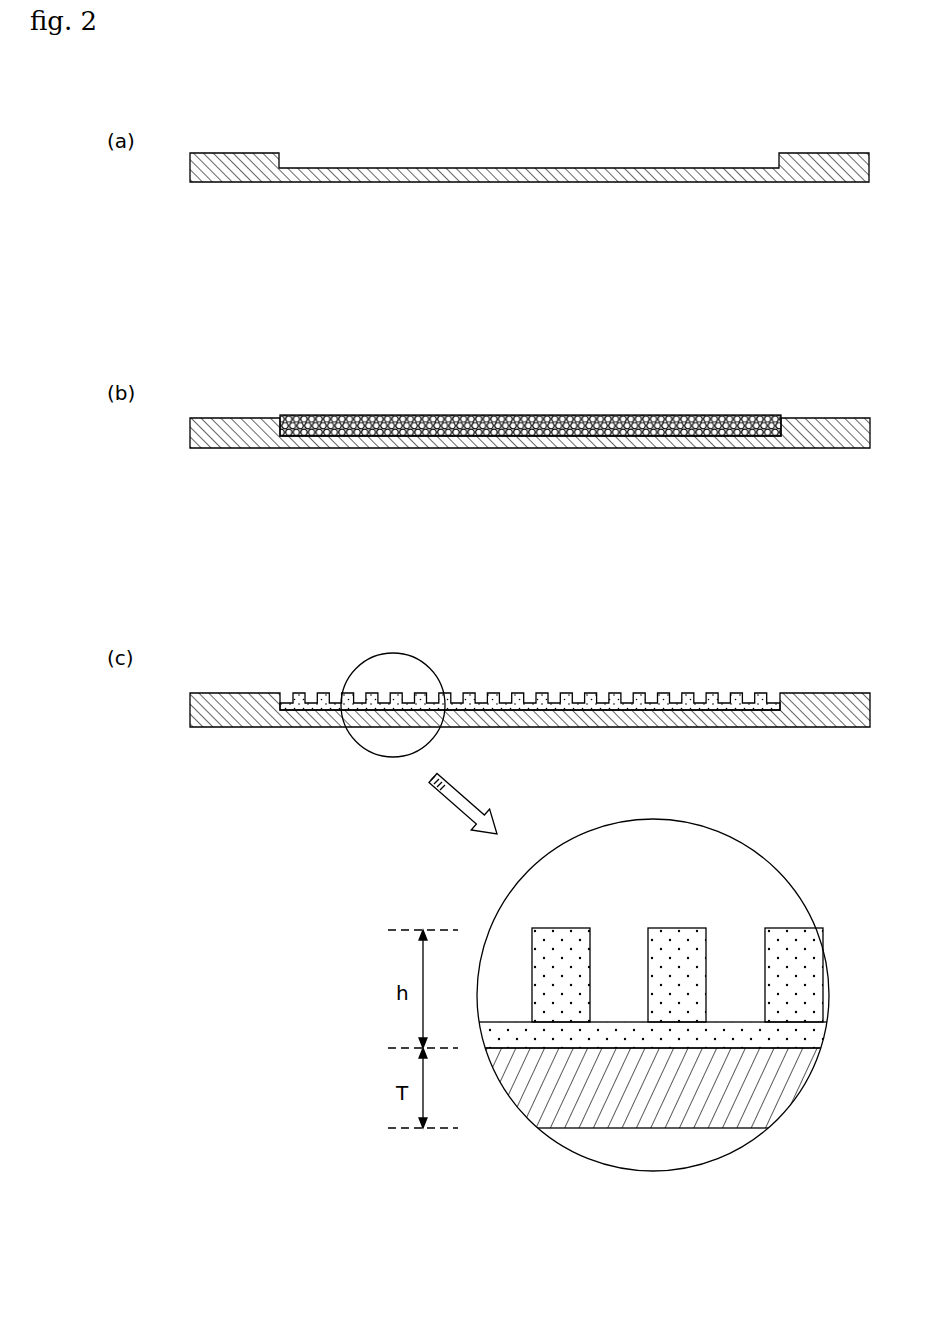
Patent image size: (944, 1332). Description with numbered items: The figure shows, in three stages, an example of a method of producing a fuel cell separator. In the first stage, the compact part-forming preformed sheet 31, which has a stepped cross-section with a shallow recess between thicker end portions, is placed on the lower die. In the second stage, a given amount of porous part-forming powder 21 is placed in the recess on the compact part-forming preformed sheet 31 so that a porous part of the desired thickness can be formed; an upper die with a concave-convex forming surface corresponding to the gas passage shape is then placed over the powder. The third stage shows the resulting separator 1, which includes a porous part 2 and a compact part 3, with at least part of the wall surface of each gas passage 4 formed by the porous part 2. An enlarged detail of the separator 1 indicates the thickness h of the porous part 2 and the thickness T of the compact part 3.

The separator 1 is at (550, 646).
The porous part 2 is at (581, 829).
The compact part 3 is at (807, 723).
The gas passage 4 is at (480, 693).
The porous part-forming powder 21 is at (417, 415).
The compact part-forming preformed sheet 31 is at (807, 170).